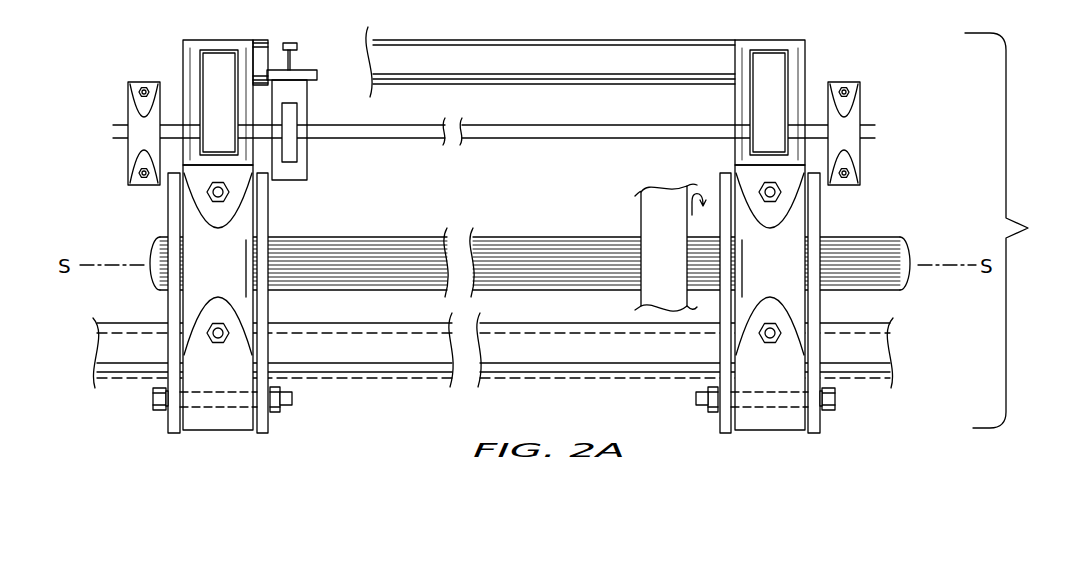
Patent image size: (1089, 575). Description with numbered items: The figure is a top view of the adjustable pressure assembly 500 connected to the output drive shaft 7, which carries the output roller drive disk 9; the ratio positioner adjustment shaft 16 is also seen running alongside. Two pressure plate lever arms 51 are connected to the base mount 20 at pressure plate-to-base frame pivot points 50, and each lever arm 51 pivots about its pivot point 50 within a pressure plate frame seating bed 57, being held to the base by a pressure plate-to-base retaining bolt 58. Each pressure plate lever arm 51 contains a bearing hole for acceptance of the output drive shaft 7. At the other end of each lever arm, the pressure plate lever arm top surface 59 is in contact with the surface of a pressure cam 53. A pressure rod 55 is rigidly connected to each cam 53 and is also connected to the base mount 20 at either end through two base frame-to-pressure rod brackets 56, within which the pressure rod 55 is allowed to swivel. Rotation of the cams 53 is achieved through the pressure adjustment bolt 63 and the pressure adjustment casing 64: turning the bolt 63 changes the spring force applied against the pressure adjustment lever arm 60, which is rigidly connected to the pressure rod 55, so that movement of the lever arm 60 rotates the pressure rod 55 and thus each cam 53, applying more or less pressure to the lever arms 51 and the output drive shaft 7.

The output drive shaft 7 is at (582, 236).
The output roller drive disk 9 is at (640, 212).
The ratio positioner adjustment shaft 16 is at (657, 55).
The base mount 20 is at (358, 378).
The pressure plate-to-base frame pivot point 50 is at (227, 407).
The pressure plate lever arm 51 is at (212, 40).
The pressure cam 53 is at (198, 60).
The pressure rod 55 is at (505, 125).
The base frame-to-pressure rod bracket 56 is at (128, 157).
The pressure plate frame seating bed 57 is at (168, 212).
The pressure plate-to-base retaining bolt 58 is at (152, 398).
The pressure plate lever arm top surface 59 is at (192, 88).
The pressure adjustment lever arm 60 is at (298, 153).
The pressure adjustment bolt 63 is at (298, 47).
The pressure adjustment casing 64 is at (308, 103).
The adjustable pressure assembly 500 is at (1020, 230).